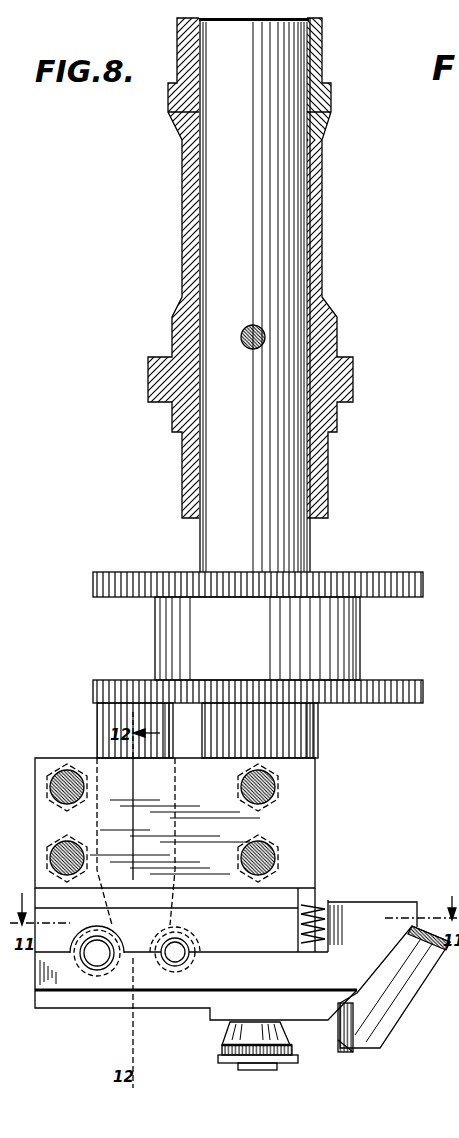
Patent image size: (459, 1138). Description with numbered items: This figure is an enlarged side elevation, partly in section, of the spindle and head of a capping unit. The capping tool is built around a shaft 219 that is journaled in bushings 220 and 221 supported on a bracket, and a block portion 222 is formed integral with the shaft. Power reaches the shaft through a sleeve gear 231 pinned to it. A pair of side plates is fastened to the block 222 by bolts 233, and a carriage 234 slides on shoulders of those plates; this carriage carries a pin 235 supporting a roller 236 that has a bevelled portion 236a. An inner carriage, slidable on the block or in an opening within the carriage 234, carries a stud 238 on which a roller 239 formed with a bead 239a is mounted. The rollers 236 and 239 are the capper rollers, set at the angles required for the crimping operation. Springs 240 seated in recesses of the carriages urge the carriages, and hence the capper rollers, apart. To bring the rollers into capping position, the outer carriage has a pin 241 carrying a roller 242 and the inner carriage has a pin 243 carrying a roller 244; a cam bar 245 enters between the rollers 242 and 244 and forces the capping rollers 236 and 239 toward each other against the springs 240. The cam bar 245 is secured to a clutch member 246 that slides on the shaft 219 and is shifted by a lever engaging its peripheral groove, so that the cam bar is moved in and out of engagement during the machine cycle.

The bushing 220 is at (322, 64).
The sleeve gear 231 is at (322, 243).
The bushing 221 is at (322, 478).
The shaft 219 is at (228, 541).
The clutch member 246 is at (408, 597).
The cam bar 245 is at (108, 733).
The bolts 233 is at (257, 847).
The block portion 222 is at (318, 828).
The springs 240 is at (322, 905).
The carriage 234 is at (371, 915).
The pin 241 is at (97, 958).
The roller 242 is at (82, 975).
The pin 243 is at (180, 940).
The roller 244 is at (200, 940).
The pin 235 is at (395, 1003).
The roller 236 is at (362, 1036).
The bevelled portion 236a is at (328, 1040).
The roller 239 is at (222, 1060).
The bead 239a is at (243, 1062).
The stud 238 is at (262, 1063).